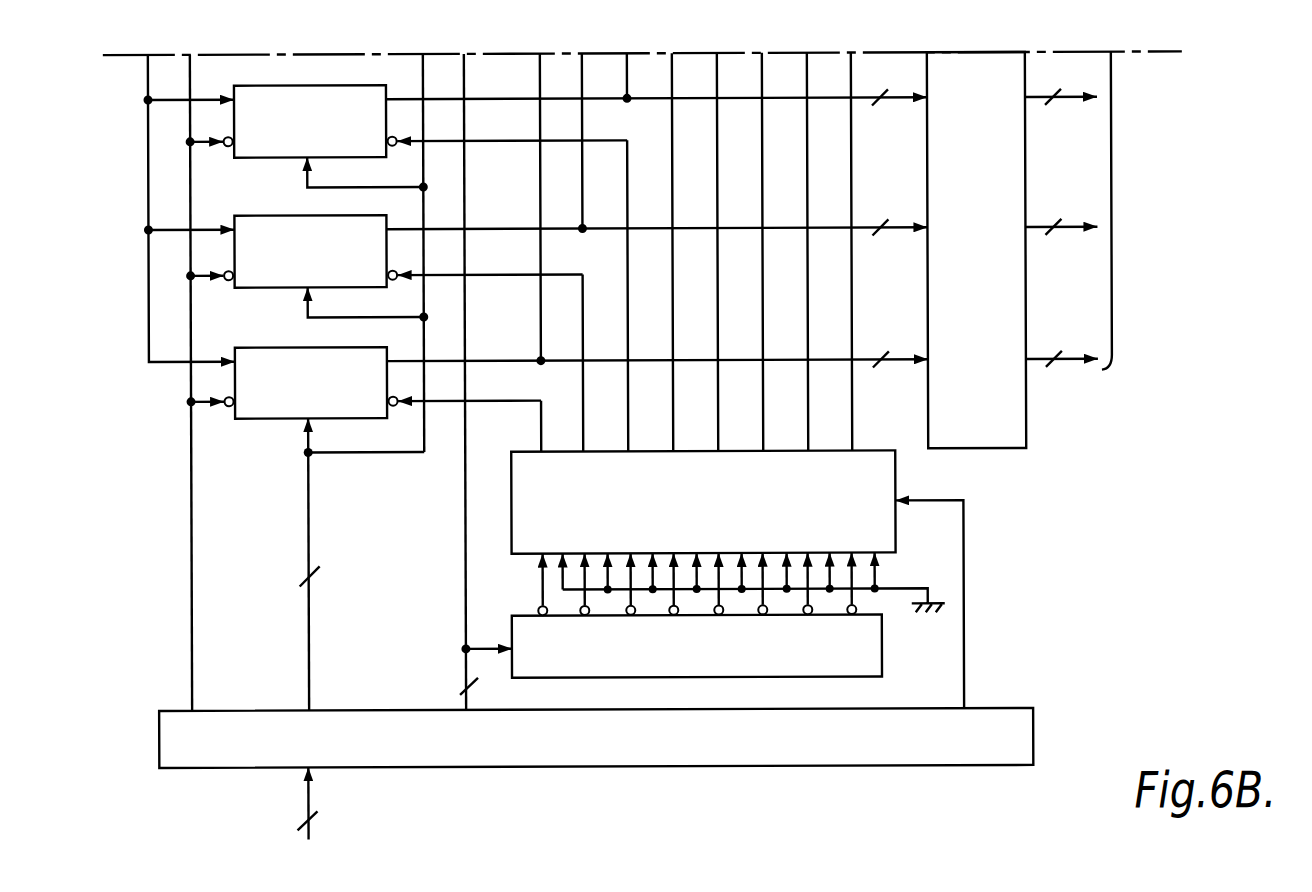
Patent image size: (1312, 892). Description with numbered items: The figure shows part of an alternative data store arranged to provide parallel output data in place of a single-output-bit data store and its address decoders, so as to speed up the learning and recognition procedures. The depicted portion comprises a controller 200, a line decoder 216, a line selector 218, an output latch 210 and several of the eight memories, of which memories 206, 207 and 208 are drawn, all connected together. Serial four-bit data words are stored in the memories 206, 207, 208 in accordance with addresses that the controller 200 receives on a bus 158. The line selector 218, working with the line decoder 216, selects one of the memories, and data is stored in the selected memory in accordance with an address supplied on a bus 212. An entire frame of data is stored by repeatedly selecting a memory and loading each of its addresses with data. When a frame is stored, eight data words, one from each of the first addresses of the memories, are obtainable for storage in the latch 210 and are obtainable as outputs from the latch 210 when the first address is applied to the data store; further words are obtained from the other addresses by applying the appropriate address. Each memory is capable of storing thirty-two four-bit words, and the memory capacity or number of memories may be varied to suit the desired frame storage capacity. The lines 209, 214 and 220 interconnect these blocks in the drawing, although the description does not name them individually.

The bus 158 is at (304, 799).
The controller 200 is at (913, 770).
The memory 206 is at (284, 159).
The memory 207 is at (284, 289).
The memory 208 is at (280, 420).
The data line 209 is at (190, 483).
The output latch 210 is at (1019, 450).
The bus 212 is at (308, 496).
The decoder input line 214 is at (463, 648).
The line decoder 216 is at (880, 652).
The line selector 218 is at (889, 479).
The select line 220 is at (962, 581).